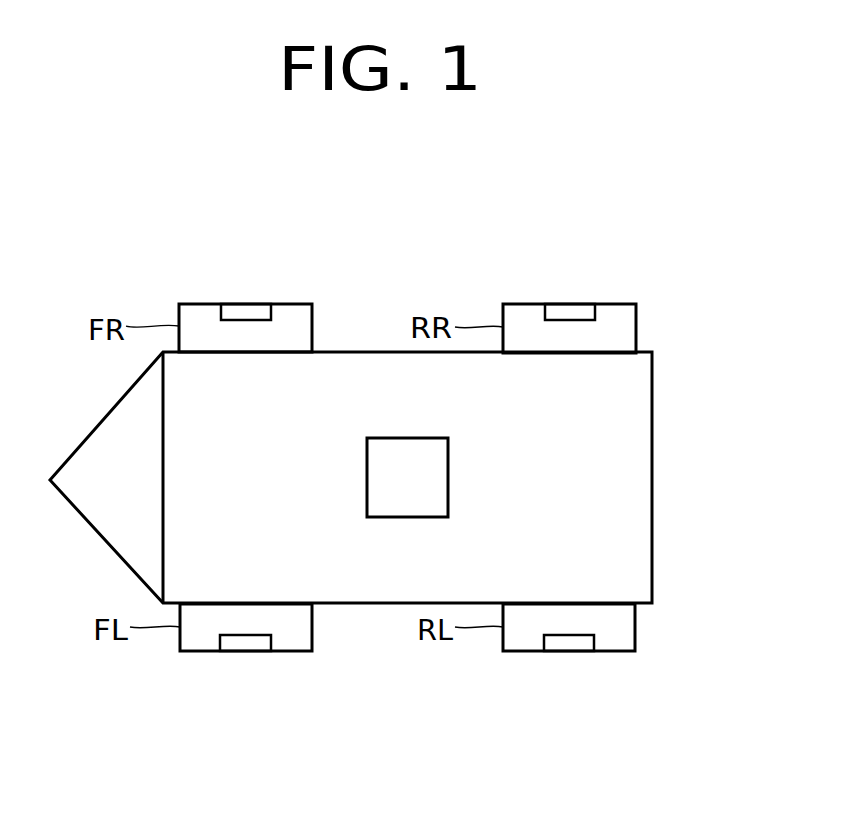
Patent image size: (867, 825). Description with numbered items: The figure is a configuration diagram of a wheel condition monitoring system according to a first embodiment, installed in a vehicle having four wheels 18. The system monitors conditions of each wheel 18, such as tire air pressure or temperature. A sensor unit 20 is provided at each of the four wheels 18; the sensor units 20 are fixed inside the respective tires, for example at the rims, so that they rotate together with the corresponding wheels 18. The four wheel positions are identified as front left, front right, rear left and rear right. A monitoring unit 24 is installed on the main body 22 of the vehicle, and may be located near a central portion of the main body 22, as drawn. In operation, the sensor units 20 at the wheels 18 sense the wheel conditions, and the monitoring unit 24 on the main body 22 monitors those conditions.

The wheel 18 is at (312, 327).
The sensor unit 20 is at (246, 304).
The main body of the vehicle 22 is at (652, 477).
The monitoring unit 24 is at (409, 438).